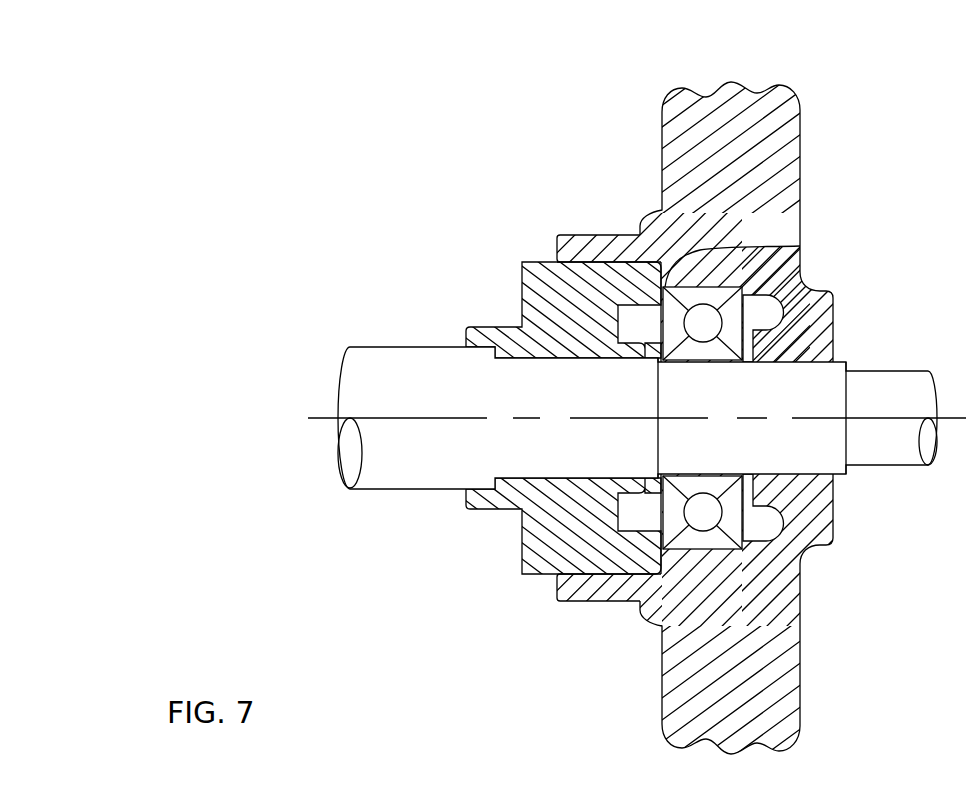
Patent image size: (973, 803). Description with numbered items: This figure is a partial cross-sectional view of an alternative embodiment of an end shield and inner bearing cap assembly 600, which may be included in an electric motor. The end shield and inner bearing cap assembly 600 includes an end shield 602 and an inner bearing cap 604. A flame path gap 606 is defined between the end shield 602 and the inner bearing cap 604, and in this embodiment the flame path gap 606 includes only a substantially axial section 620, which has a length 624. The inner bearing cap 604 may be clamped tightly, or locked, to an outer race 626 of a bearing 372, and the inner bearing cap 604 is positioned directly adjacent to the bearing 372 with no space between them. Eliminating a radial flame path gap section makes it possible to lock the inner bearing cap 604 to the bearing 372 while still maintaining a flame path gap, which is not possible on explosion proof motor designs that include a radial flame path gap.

The end shield and inner bearing cap assembly 600 is at (740, 34).
The end shield 602 is at (800, 180).
The inner bearing cap 604 is at (522, 292).
The flame path gap 606 is at (572, 262).
The axial section 620 is at (595, 262).
The length 624 is at (662, 183).
The outer race 626 is at (800, 246).
The bearing 372 is at (745, 318).